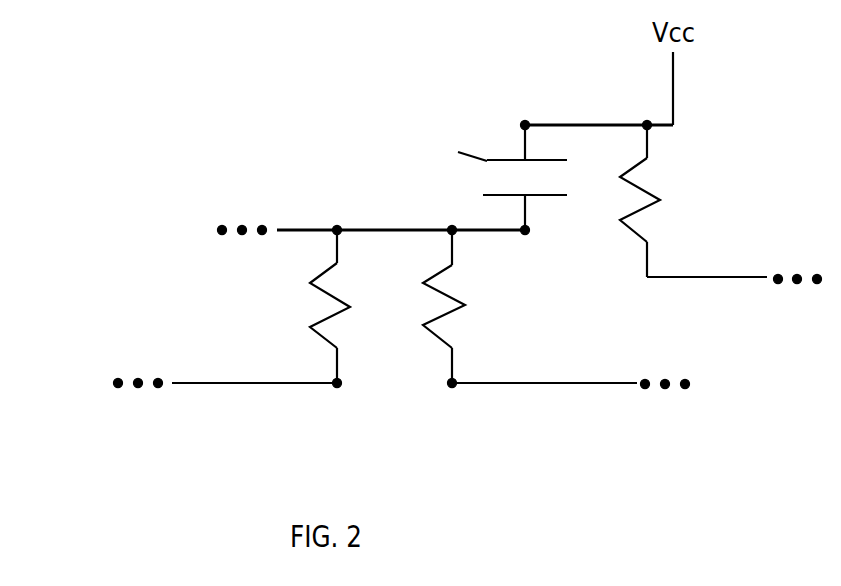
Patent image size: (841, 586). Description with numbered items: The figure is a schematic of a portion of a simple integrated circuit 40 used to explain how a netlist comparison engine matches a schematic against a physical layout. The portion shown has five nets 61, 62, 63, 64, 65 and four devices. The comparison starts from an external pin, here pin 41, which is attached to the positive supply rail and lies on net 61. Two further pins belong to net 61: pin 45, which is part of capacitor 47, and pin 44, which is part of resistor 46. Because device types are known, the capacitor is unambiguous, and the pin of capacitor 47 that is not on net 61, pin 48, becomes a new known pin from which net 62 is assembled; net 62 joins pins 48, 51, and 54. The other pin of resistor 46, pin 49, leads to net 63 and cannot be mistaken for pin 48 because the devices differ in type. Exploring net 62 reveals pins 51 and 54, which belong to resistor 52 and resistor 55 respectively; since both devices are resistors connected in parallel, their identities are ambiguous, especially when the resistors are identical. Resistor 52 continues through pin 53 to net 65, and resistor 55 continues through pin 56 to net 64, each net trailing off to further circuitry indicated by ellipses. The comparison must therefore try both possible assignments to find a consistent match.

The integrated circuit 40 is at (122, 71).
The pin 41 is at (673, 68).
The pin 44 is at (648, 135).
The pin 45 is at (526, 135).
The resistor 46 is at (656, 202).
The capacitor 47 is at (469, 136).
The pin 48 is at (525, 208).
The pin 49 is at (648, 253).
The pin 51 is at (338, 242).
The resistor 52 is at (350, 307).
The pin 53 is at (339, 363).
The pin 54 is at (453, 243).
The resistor 55 is at (465, 305).
The pin 56 is at (453, 353).
The net 61 is at (588, 125).
The net 62 is at (380, 230).
The net 63 is at (733, 277).
The net 64 is at (560, 383).
The net 65 is at (207, 383).